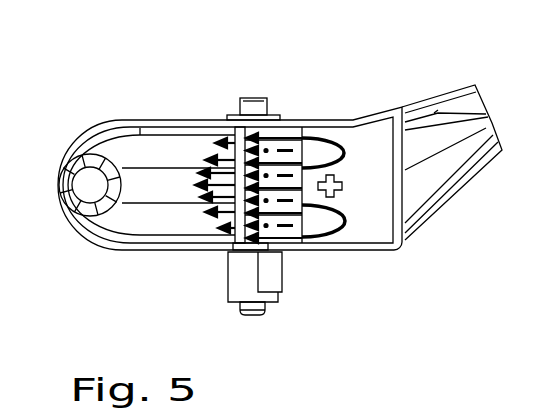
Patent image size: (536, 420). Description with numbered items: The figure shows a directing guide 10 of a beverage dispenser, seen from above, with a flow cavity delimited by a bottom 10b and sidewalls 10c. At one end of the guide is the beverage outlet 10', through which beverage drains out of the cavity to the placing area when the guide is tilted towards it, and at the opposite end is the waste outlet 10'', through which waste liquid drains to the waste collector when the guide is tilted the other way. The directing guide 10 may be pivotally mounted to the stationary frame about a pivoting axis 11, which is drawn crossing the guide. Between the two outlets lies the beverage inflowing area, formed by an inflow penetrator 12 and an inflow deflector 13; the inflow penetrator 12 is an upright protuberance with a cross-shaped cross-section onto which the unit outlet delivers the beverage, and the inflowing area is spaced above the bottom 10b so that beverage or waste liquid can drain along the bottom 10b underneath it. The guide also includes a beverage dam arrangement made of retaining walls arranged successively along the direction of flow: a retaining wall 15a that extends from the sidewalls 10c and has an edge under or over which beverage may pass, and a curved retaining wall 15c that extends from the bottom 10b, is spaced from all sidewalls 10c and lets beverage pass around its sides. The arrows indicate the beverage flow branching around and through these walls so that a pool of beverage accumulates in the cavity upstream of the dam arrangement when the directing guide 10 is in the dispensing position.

The directing guide 10 is at (230, 141).
The beverage outlet 10' is at (92, 233).
The waste outlet 10'' is at (452, 177).
The bottom 10b is at (170, 212).
The sidewalls 10c is at (317, 119).
The pivoting axis 11 is at (255, 293).
The inflow penetrator 12 is at (337, 183).
The inflow deflector 13 is at (370, 228).
The retaining wall 15a is at (245, 137).
The retaining wall 15c is at (125, 183).